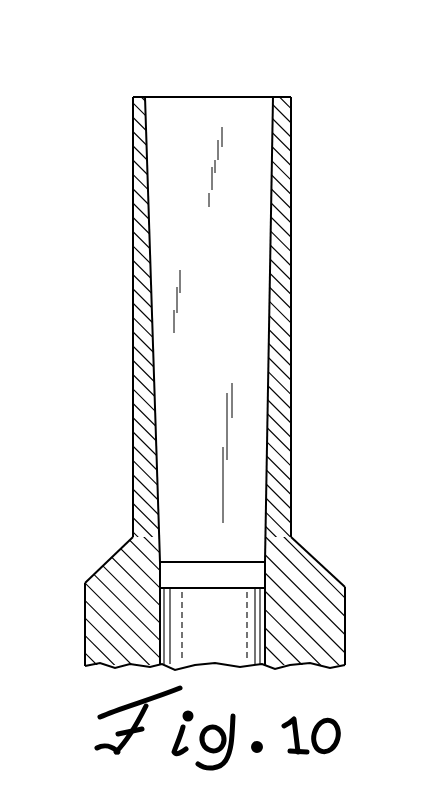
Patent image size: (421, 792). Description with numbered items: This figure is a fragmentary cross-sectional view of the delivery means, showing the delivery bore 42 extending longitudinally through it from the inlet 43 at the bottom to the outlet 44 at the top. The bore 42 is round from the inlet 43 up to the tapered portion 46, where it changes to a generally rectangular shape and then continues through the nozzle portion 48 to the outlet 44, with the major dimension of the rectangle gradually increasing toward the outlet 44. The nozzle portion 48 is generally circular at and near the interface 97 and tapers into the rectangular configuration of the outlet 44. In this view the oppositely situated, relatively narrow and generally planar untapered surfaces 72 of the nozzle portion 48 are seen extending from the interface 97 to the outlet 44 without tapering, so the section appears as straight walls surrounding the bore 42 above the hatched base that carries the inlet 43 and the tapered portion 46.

The delivery bore 42 is at (247, 445).
The inlet 43 is at (107, 625).
The outlet 44 is at (200, 117).
The tapered portion 46 is at (120, 572).
The nozzle portion 48 is at (285, 373).
The untapered surfaces 72 is at (132, 262).
The interface 97 is at (132, 535).